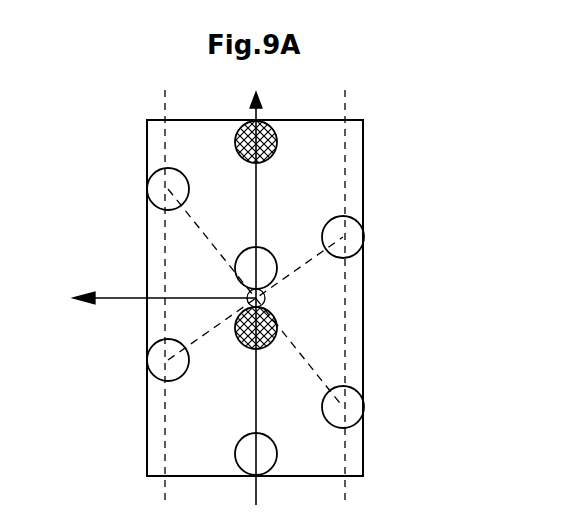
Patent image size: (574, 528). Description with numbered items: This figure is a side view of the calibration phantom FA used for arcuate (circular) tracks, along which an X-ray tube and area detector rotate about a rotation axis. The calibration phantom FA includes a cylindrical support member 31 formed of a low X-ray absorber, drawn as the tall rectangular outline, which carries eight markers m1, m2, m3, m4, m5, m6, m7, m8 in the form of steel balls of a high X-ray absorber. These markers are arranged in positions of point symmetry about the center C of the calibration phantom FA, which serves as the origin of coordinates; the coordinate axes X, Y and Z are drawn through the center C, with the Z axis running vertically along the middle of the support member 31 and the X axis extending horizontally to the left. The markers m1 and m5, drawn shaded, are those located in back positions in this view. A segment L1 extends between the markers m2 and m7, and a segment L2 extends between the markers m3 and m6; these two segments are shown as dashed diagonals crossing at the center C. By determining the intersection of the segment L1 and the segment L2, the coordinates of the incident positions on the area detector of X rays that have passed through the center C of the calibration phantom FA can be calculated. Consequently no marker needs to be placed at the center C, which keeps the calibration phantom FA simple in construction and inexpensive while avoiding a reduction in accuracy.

The marker m1 is at (243, 128).
The marker m2 is at (150, 182).
The marker m3 is at (360, 258).
The marker m4 is at (264, 248).
The marker m5 is at (238, 345).
The marker m6 is at (155, 377).
The marker m7 is at (355, 425).
The marker m8 is at (236, 458).
The cylindrical support member 31 is at (358, 180).
The calibration phantom for arcuate tracks FA is at (377, 147).
The segment L1 is at (202, 233).
The segment L2 is at (202, 332).
The center of the calibration phantom C is at (262, 304).
The X axis X is at (151, 320).
The Y axis Y is at (264, 298).
The Z axis Z is at (255, 285).